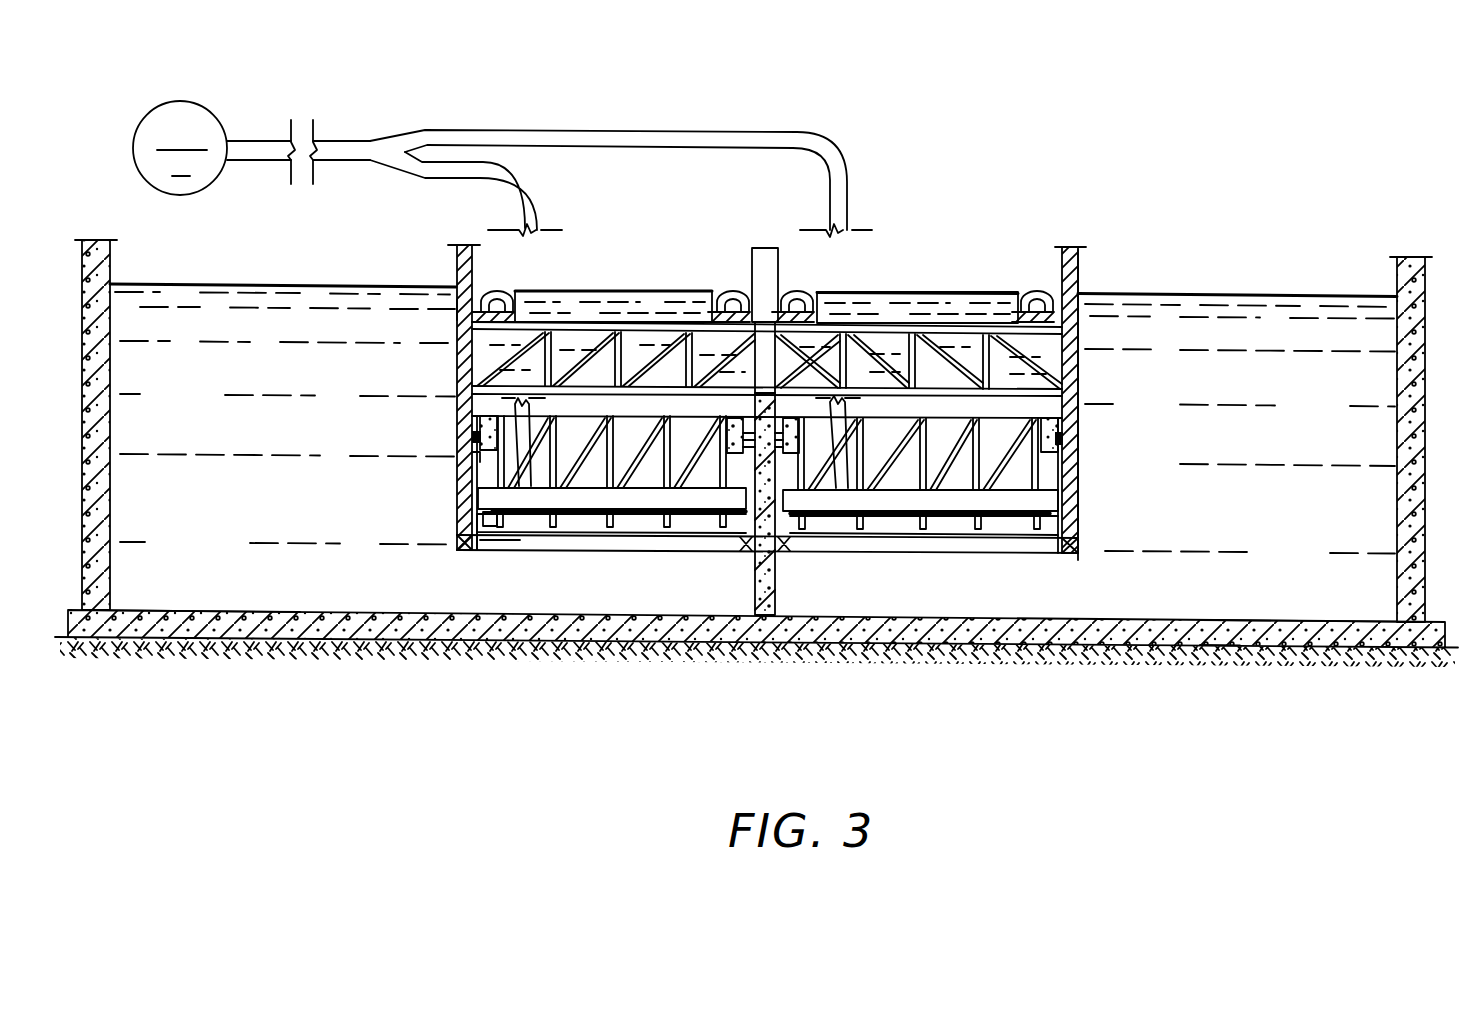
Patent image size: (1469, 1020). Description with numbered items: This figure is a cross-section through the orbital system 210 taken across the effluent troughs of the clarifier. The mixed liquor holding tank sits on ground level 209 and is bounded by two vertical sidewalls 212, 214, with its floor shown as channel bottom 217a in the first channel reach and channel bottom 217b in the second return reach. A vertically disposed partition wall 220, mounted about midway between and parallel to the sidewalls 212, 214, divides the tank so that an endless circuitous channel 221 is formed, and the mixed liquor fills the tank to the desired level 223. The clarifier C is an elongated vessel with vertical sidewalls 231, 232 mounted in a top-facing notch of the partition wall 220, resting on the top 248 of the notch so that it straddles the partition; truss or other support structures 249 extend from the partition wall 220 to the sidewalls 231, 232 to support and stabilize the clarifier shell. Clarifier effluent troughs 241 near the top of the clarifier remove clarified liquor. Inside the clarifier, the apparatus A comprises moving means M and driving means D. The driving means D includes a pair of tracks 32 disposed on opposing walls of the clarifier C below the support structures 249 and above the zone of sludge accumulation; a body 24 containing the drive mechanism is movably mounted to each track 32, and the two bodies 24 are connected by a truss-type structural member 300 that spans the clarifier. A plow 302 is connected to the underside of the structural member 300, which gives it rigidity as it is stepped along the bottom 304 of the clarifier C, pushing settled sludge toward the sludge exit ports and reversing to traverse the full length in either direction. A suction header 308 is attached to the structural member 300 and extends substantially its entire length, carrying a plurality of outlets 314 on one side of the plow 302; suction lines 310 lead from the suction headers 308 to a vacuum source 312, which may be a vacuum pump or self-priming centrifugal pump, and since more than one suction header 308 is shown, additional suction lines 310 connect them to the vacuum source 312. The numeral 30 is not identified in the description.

The ground level 209 is at (1190, 620).
The orbital system 210 is at (1216, 668).
The sidewall 212 is at (100, 240).
The sidewall 214 is at (1411, 257).
The channel bottom 217a is at (1302, 621).
The channel bottom 217b is at (183, 611).
The partition wall 220 is at (761, 248).
The circuitous channel 221 is at (755, 423).
The liquid level 223 is at (1250, 293).
The clarifier sidewall 231 is at (1079, 292).
The clarifier sidewall 232 is at (458, 285).
The body 24 is at (480, 425).
The clarifier effluent trough 241 is at (490, 300).
The top of notch 248 is at (770, 376).
The support structure 249 is at (606, 322).
The wall portion 30 is at (456, 305).
The structural member 300 is at (569, 416).
The plow 302 is at (645, 532).
The bottom of clarifier 304 is at (1045, 538).
The suction header 308 is at (575, 512).
The suction line 310 is at (607, 131).
The vacuum source 312 is at (226, 124).
The outlet 314 is at (478, 520).
The track 32 is at (475, 437).
The apparatus A is at (502, 548).
The clarifier C is at (1084, 257).
The driving means D is at (476, 458).
The moving means M is at (1046, 480).